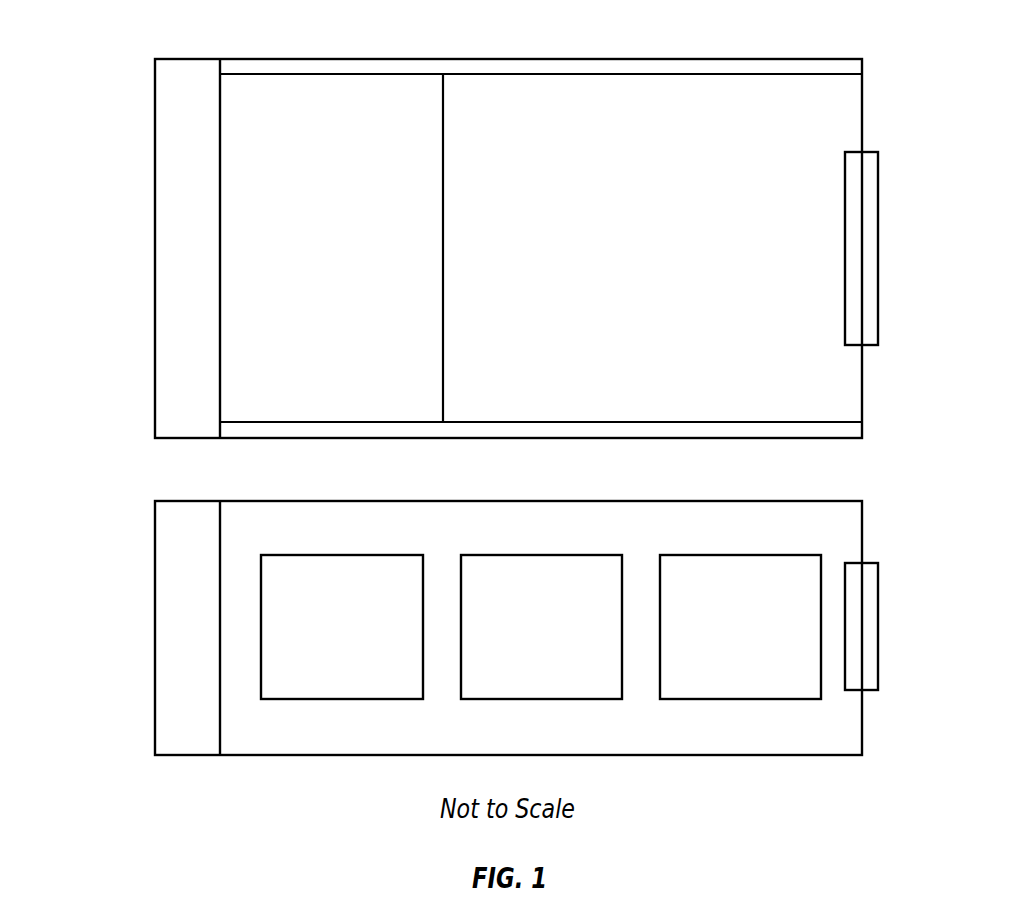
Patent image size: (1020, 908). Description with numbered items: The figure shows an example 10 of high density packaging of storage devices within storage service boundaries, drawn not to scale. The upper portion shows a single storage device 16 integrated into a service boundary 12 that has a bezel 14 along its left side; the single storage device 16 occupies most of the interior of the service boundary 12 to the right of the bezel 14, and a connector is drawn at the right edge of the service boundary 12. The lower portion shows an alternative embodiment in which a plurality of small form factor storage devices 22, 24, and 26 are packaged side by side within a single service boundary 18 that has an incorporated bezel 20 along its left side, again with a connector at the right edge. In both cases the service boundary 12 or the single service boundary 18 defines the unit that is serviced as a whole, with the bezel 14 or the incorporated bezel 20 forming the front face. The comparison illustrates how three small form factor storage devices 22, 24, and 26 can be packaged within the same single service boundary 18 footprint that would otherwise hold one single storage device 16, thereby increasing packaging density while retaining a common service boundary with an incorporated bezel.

The example of high density packaging 10 is at (151, 790).
The service boundary 12 is at (418, 57).
The bezel 14 is at (187, 70).
The single storage device 16 is at (835, 118).
The single service boundary 18 is at (510, 497).
The incorporated bezel 20 is at (187, 510).
The small form factor storage device 22 is at (341, 700).
The small form factor storage device 24 is at (540, 700).
The small form factor storage device 26 is at (740, 700).